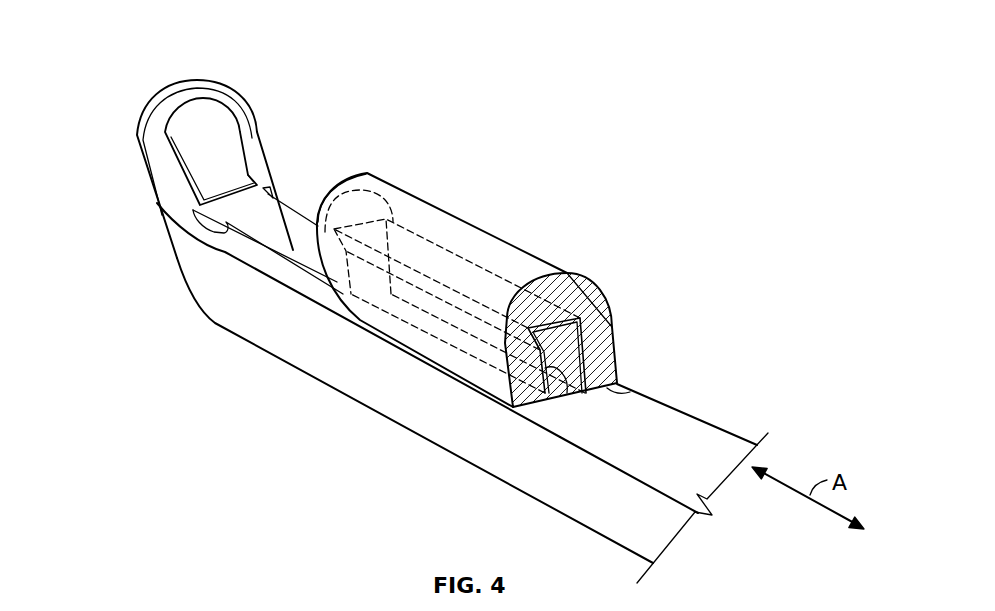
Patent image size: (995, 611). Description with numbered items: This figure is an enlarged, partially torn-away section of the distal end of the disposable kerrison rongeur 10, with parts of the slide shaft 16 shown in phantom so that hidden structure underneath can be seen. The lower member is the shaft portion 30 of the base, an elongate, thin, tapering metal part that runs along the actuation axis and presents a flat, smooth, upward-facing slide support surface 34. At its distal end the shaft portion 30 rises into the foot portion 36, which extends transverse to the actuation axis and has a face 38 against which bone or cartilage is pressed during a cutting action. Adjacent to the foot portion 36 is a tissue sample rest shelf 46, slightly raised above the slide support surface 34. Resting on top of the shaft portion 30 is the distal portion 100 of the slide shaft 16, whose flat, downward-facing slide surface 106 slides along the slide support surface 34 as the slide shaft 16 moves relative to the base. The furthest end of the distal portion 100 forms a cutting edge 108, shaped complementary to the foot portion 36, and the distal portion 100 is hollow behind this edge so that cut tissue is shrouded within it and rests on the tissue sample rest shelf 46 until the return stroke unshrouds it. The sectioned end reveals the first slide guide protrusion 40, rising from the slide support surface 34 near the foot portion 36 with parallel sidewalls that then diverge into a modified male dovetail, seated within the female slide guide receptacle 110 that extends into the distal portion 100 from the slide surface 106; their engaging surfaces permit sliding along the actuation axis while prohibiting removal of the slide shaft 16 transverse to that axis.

The disposable kerrison rongeur 10 is at (774, 130).
The slide shaft 16 is at (548, 214).
The shaft portion 30 is at (592, 524).
The slide support surface 34 is at (262, 267).
The foot portion 36 is at (163, 84).
The face 38 is at (203, 140).
The first slide guide protrusion 40 is at (568, 332).
The tissue sample rest shelf 46 is at (291, 222).
The distal portion 100 is at (443, 202).
The slide surface 106 is at (622, 385).
The cutting edge 108 is at (358, 173).
The slide guide receptacle 110 is at (568, 393).